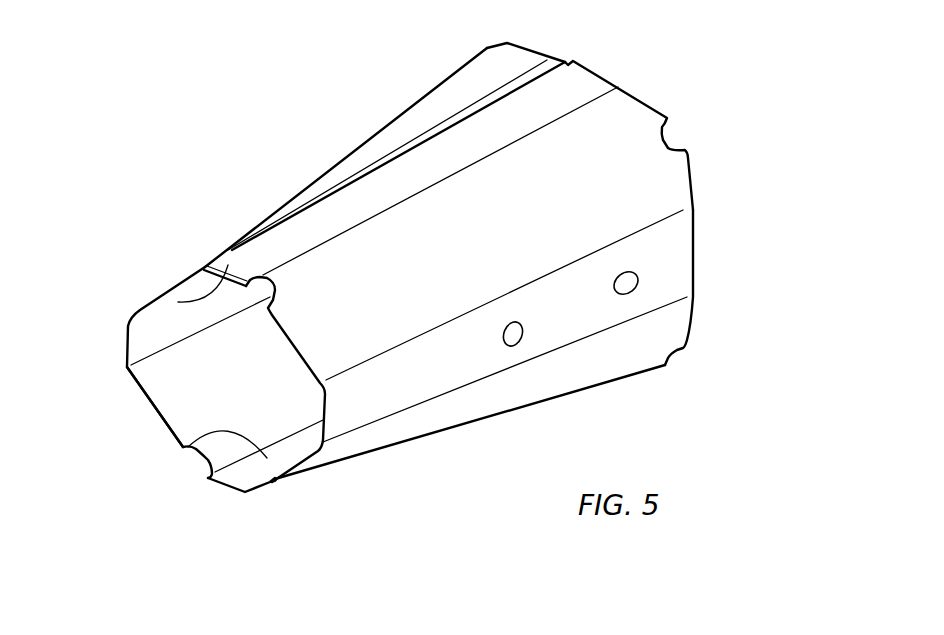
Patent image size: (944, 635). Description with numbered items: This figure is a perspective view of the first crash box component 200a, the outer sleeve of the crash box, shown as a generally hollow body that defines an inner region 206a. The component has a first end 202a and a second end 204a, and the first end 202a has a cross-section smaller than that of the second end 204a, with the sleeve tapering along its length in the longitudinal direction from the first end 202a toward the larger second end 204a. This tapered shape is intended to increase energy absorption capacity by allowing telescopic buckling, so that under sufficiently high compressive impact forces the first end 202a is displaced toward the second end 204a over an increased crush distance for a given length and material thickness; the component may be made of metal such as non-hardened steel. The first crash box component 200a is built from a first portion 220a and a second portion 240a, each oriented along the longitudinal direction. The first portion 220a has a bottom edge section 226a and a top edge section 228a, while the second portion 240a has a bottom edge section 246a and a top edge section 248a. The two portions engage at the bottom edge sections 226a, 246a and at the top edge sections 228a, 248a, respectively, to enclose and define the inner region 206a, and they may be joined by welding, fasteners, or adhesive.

The first crash box component 200a is at (254, 118).
The second portion 240a is at (406, 110).
The second end 204a is at (633, 93).
The first portion 220a is at (655, 192).
The top edge section 228a is at (227, 266).
The top edge section 248a is at (176, 297).
The first end 202a is at (127, 371).
The inner region 206a is at (244, 380).
The bottom edge section 246a is at (186, 447).
The bottom edge section 226a is at (225, 484).